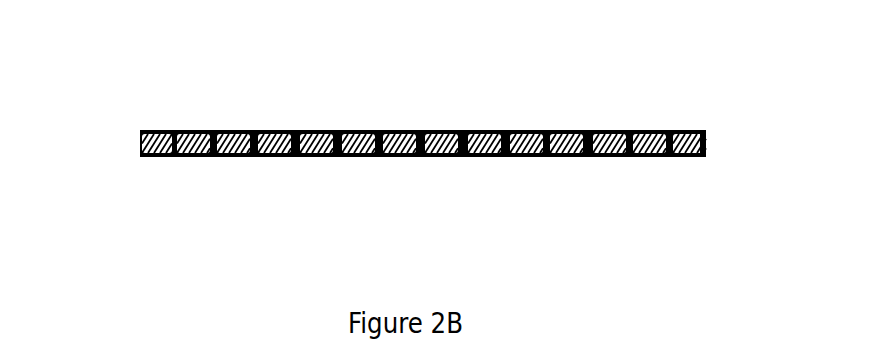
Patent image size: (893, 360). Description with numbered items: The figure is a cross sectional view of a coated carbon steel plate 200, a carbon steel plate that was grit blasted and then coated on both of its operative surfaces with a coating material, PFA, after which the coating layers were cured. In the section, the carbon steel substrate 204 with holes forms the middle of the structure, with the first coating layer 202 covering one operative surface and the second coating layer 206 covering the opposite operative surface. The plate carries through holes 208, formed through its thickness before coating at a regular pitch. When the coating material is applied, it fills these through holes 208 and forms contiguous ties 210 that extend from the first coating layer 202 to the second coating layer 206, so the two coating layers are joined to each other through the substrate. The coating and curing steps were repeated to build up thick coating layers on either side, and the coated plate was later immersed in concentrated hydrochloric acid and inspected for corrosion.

The coated carbon steel plate 200 is at (158, 101).
The first coating layer 202 is at (276, 124).
The carbon steel substrate 204 is at (716, 149).
The second coating layer 206 is at (276, 163).
The through holes 208 is at (477, 128).
The contiguous ties 210 is at (554, 162).